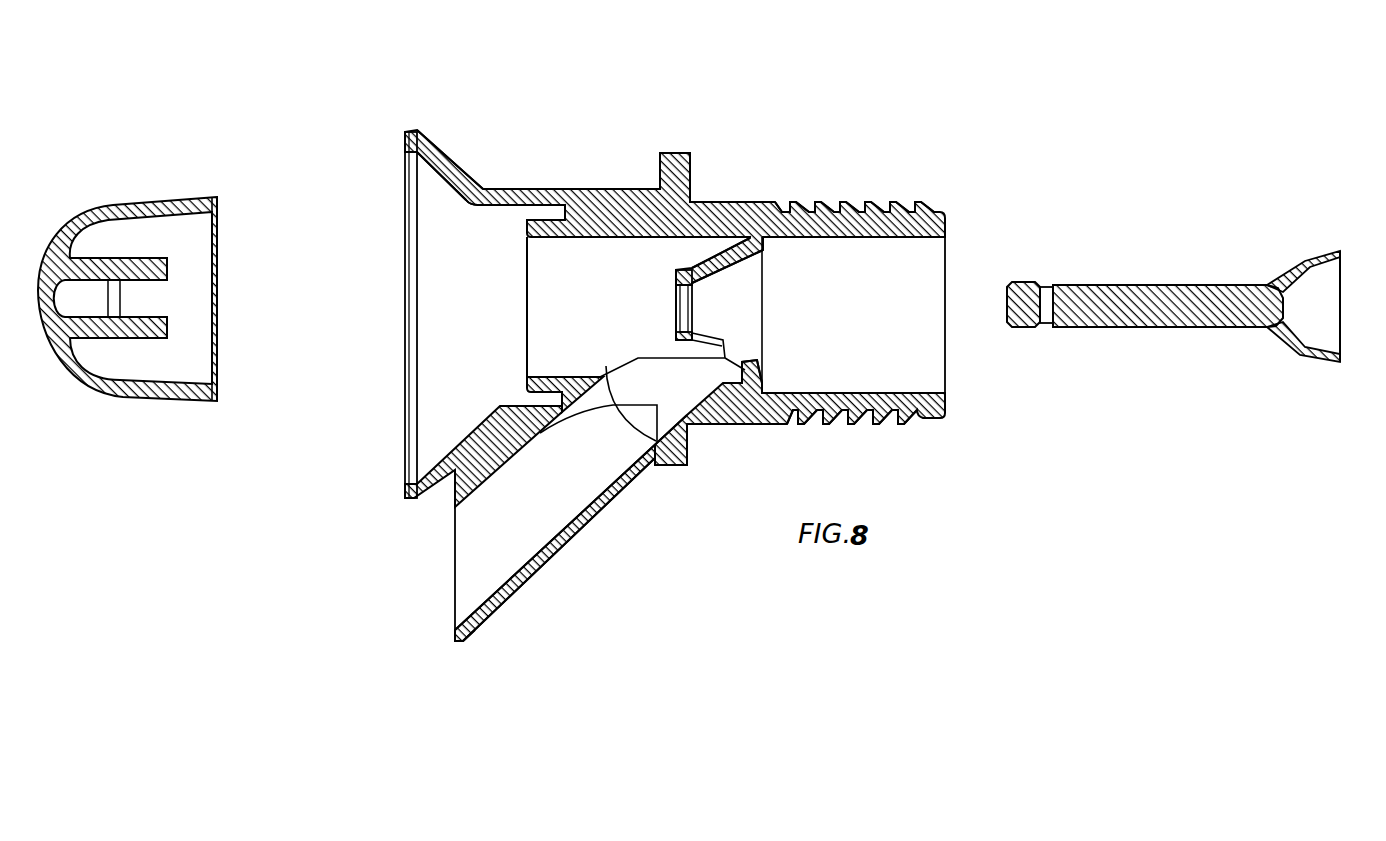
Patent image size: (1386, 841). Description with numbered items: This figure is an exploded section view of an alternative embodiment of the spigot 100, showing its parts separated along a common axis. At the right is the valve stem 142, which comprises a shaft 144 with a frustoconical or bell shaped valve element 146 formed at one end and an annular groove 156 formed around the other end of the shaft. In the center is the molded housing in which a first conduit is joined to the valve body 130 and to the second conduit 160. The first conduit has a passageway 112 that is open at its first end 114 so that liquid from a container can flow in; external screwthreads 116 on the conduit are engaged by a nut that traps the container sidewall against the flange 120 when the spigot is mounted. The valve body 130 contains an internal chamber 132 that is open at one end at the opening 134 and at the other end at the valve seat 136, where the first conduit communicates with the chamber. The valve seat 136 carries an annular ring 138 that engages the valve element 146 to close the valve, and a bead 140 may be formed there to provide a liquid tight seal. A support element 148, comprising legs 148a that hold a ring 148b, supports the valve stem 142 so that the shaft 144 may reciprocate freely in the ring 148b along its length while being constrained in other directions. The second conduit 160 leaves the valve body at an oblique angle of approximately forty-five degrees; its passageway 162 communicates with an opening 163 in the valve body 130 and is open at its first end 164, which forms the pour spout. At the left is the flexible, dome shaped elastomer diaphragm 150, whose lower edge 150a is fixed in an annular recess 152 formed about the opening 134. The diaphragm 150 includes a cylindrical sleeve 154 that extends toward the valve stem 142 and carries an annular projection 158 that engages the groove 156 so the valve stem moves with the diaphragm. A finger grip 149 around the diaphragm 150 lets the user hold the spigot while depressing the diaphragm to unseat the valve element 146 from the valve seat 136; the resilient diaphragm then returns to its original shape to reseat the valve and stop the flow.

The spigot 100 is at (935, 158).
The passageway 112 is at (950, 240).
The first end 114 is at (932, 280).
The external screwthreads 116 is at (910, 425).
The flange 120 is at (670, 153).
The valve body 130 is at (596, 188).
The internal chamber 132 is at (565, 238).
The opening 134 is at (530, 280).
The valve seat 136 is at (738, 333).
The annular ring 138 is at (752, 352).
The bead 140 is at (1323, 250).
The valve stem 142 is at (1137, 282).
The shaft 144 is at (1157, 322).
The valve element 146 is at (1312, 262).
The support element 148 is at (687, 266).
The legs 148a is at (720, 330).
The ring 148b is at (674, 272).
The finger grip 149 is at (415, 130).
The diaphragm 150 is at (88, 197).
The lower edge 150a is at (220, 200).
The annular recess 152 is at (562, 208).
The cylindrical sleeve 154 is at (150, 257).
The annular groove 156 is at (1047, 330).
The annular projection 158 is at (147, 308).
The second conduit 160 is at (546, 558).
The passageway 162 is at (495, 530).
The opening 163 is at (657, 443).
The first end 164 is at (455, 612).